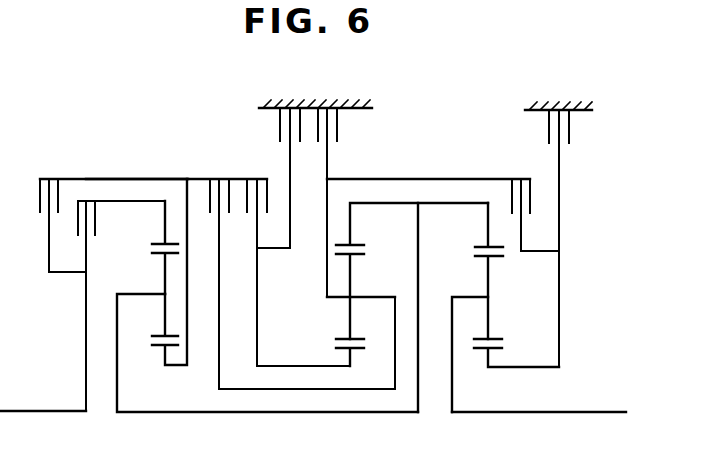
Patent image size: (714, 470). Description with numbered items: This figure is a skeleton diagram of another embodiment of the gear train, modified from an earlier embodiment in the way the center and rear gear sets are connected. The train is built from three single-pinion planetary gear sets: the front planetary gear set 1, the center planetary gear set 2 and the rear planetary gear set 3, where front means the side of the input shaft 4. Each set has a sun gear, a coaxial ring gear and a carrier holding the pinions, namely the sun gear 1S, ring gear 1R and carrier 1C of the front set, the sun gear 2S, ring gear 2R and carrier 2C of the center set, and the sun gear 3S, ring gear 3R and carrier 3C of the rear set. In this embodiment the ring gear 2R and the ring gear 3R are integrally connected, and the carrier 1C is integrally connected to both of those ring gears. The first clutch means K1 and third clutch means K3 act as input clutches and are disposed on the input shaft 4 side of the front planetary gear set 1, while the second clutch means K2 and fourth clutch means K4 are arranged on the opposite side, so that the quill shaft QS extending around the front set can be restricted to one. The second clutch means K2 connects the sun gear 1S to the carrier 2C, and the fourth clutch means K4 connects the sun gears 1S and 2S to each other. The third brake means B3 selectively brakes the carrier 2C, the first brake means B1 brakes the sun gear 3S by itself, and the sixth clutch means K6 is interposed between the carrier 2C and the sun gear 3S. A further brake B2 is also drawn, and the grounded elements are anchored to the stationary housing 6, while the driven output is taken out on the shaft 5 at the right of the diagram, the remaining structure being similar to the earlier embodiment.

The front planetary gear set 1 is at (261, 316).
The center planetary gear set 2 is at (392, 329).
The rear planetary gear set 3 is at (499, 329).
The input shaft 4 is at (38, 410).
The output shaft 5 is at (570, 412).
The transmission housing (ground) 6 is at (314, 107).
The first clutch means K1 is at (120, 297).
The second clutch means K2 is at (301, 273).
The third clutch means K3 is at (62, 214).
The fourth clutch means K4 is at (297, 261).
The sixth clutch means K6 is at (531, 204).
The first brake means B1 is at (541, 238).
The second brake B2 is at (275, 178).
The third brake means B3 is at (356, 248).
The quill shaft QS is at (123, 178).
The ring gear of front planetary gear set 1R is at (161, 243).
The carrier of front planetary gear set 1C is at (139, 293).
The sun gear of front planetary gear set 1S is at (167, 382).
The ring gear of center planetary gear set 2R is at (355, 244).
The carrier of center planetary gear set 2C is at (353, 296).
The sun gear of center planetary gear set 2S is at (347, 378).
The ring gear of rear planetary gear set 3R is at (477, 244).
The carrier of rear planetary gear set 3C is at (477, 296).
The sun gear of rear planetary gear set 3S is at (496, 378).